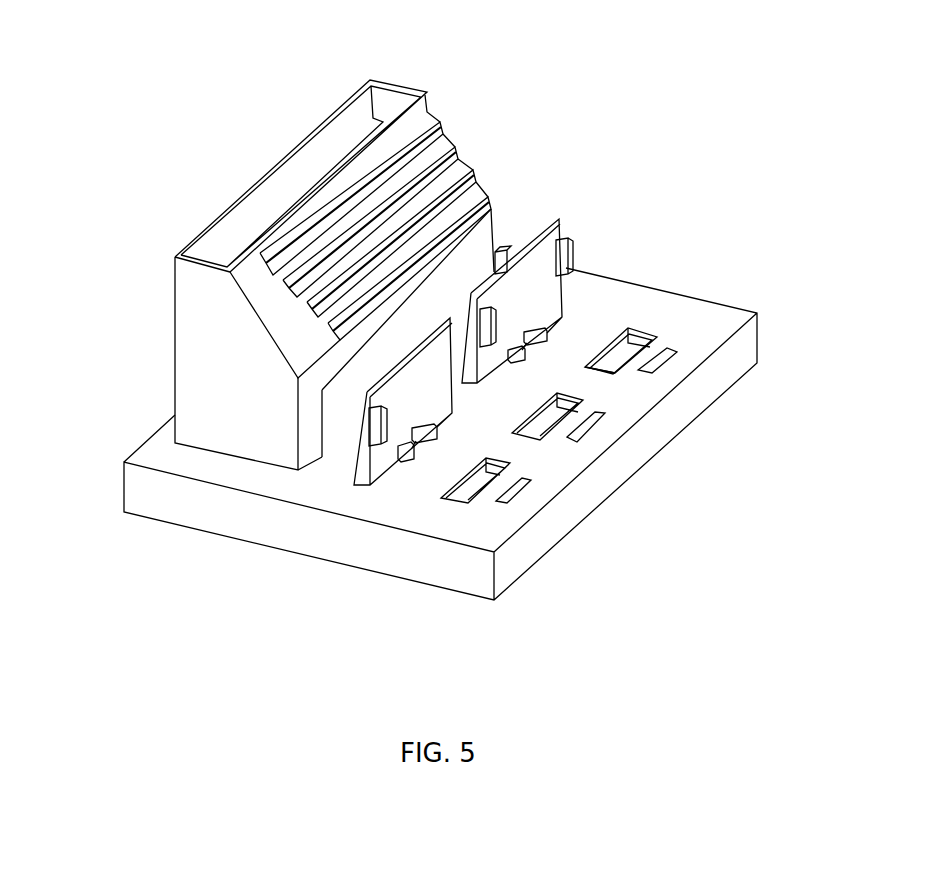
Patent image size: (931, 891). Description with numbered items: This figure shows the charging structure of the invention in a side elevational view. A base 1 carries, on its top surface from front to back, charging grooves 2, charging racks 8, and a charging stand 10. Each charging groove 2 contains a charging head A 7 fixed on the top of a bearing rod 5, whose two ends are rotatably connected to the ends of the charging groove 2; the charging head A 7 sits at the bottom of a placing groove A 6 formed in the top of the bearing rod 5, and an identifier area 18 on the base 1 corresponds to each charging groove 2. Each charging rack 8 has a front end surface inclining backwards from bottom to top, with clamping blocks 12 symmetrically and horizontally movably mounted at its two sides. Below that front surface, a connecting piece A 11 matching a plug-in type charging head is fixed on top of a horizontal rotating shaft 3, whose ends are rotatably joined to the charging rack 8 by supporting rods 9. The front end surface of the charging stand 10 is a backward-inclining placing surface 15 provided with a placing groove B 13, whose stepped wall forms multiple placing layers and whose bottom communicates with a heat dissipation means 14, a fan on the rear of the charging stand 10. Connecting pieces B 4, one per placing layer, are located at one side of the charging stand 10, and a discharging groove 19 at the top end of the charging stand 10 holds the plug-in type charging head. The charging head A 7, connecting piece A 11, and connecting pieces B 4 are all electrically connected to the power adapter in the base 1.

The base 1 is at (700, 338).
The charging groove 2 is at (600, 375).
The horizontal rotating shaft 3 is at (460, 492).
The connecting piece B 4 is at (505, 257).
The bearing rod 5 is at (613, 350).
The placing groove A 6 is at (640, 340).
The charging head A 7 is at (628, 333).
The charging rack 8 is at (358, 418).
The supporting rod 9 is at (408, 460).
The charging stand 10 is at (260, 403).
The connecting piece A 11 is at (530, 355).
The clamping block 12 is at (380, 443).
The placing groove B 13 is at (442, 197).
The heat dissipation means 14 is at (333, 412).
The placing surface 15 is at (280, 302).
The identifier area 18 is at (658, 360).
The discharging groove 19 is at (358, 122).